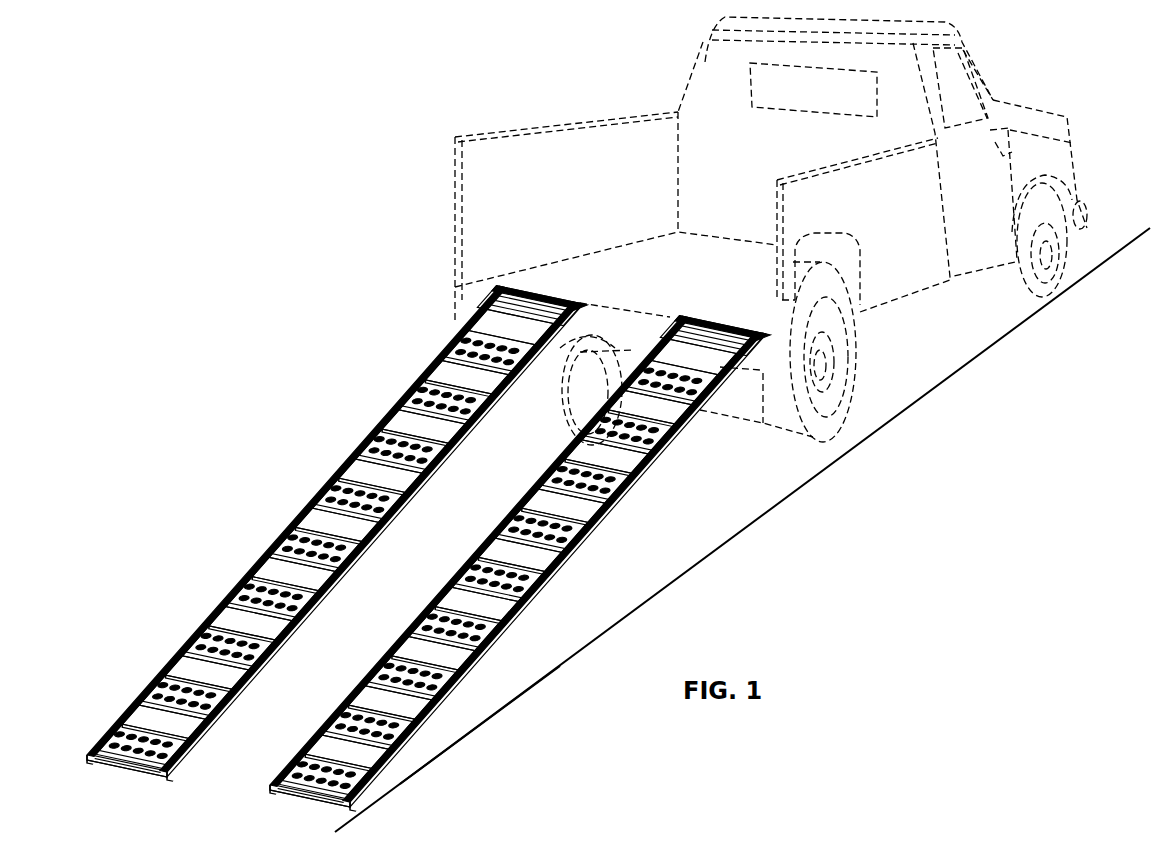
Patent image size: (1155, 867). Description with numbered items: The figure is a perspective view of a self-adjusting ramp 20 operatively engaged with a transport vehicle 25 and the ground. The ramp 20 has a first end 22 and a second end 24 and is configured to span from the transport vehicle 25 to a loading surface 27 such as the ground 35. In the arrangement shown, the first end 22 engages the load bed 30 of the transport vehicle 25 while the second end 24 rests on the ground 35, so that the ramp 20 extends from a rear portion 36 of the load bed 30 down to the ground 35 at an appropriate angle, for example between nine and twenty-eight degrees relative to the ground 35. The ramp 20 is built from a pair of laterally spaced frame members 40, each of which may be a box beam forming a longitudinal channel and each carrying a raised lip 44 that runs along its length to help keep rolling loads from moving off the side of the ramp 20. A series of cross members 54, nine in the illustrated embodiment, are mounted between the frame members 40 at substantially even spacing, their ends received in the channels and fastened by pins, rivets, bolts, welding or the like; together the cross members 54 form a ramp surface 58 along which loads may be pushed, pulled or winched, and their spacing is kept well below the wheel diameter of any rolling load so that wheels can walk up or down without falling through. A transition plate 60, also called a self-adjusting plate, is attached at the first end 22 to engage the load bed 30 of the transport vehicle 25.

The self-adjusting ramp 20 is at (515, 526).
The first end 22 is at (490, 287).
The second end 24 is at (172, 770).
The transport vehicle 25 is at (771, 231).
The loading surface 27 is at (380, 800).
The load bed 30 is at (602, 270).
The ground 35 is at (475, 731).
The rear portion 36 is at (590, 398).
The frame member 40 is at (420, 368).
The raised lip 44 is at (290, 552).
The cross member 54 is at (452, 326).
The ramp surface 58 is at (142, 768).
The transition plate 60 is at (502, 280).